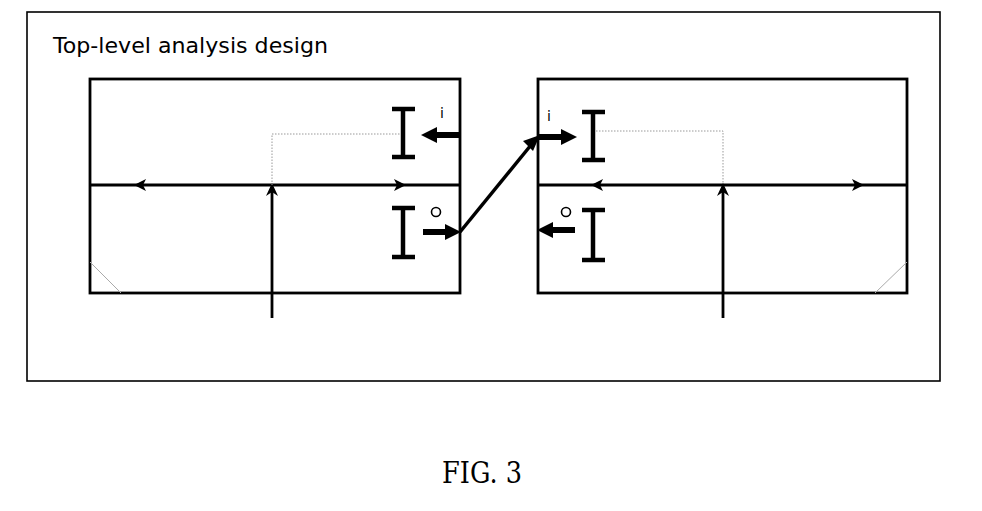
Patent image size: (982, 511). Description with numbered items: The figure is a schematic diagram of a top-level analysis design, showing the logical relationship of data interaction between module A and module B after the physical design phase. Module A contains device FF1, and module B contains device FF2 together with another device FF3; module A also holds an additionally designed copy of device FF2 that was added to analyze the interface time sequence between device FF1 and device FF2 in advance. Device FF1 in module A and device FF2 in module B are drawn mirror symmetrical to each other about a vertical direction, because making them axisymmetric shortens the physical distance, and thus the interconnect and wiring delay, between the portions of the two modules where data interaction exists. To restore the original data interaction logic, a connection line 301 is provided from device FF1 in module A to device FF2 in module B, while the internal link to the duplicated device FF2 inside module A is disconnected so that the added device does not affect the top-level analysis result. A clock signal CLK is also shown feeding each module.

The connection line 301 is at (489, 192).
The module A is at (275, 186).
The module B is at (722, 186).
The device FF1 is at (403, 246).
The device FF2 is at (498, 124).
The device FF3 is at (593, 248).
The clock signal CLK is at (496, 234).